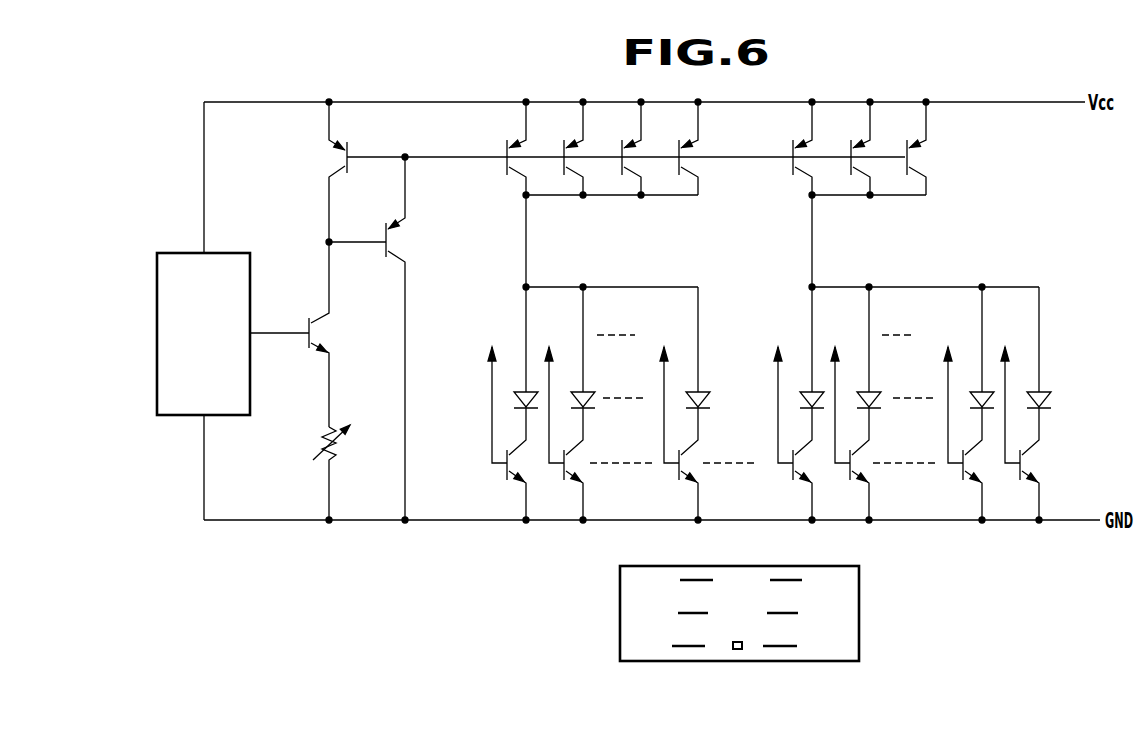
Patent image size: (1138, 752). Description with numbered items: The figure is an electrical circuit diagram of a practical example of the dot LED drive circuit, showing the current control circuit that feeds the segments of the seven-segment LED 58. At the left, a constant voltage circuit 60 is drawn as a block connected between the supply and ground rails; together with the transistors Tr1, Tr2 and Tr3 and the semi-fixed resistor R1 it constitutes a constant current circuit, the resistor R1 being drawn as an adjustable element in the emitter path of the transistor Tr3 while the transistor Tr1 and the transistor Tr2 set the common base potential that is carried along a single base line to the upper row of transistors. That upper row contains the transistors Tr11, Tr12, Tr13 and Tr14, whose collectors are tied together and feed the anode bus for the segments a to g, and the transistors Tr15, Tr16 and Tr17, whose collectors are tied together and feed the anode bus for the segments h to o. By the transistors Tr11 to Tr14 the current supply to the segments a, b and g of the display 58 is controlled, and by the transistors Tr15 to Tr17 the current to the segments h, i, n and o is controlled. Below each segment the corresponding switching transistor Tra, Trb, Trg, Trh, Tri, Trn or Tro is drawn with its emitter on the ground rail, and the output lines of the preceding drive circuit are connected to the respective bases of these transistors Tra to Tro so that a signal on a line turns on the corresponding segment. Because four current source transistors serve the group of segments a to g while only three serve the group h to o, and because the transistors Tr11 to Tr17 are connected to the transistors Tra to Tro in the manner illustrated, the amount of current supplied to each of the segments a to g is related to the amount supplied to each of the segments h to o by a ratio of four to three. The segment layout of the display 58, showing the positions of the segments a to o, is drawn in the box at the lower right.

The constant voltage circuit 60 is at (175, 416).
The 7-segment LED 58 is at (860, 575).
The transistor Tr1 is at (335, 155).
The transistor Tr2 is at (398, 243).
The transistor Tr3 is at (320, 333).
The semi-fixed resistor R1 is at (338, 447).
The transistor Tr11 is at (528, 151).
The transistor Tr12 is at (585, 151).
The transistor Tr13 is at (643, 151).
The transistor Tr14 is at (700, 151).
The transistor Tr15 is at (814, 151).
The transistor Tr16 is at (872, 151).
The transistor Tr17 is at (928, 151).
The transistor Tra is at (517, 483).
The transistor Trb is at (574, 483).
The transistor Trg is at (679, 483).
The transistor Trh is at (803, 483).
The transistor Tri is at (860, 483).
The transistor Trn is at (973, 483).
The transistor Tro is at (1030, 483).
The segment a is at (518, 399).
The segment b is at (575, 399).
The segment g is at (690, 399).
The segment h is at (804, 399).
The segment i is at (861, 399).
The segment n is at (974, 399).
The segment o is at (1031, 399).